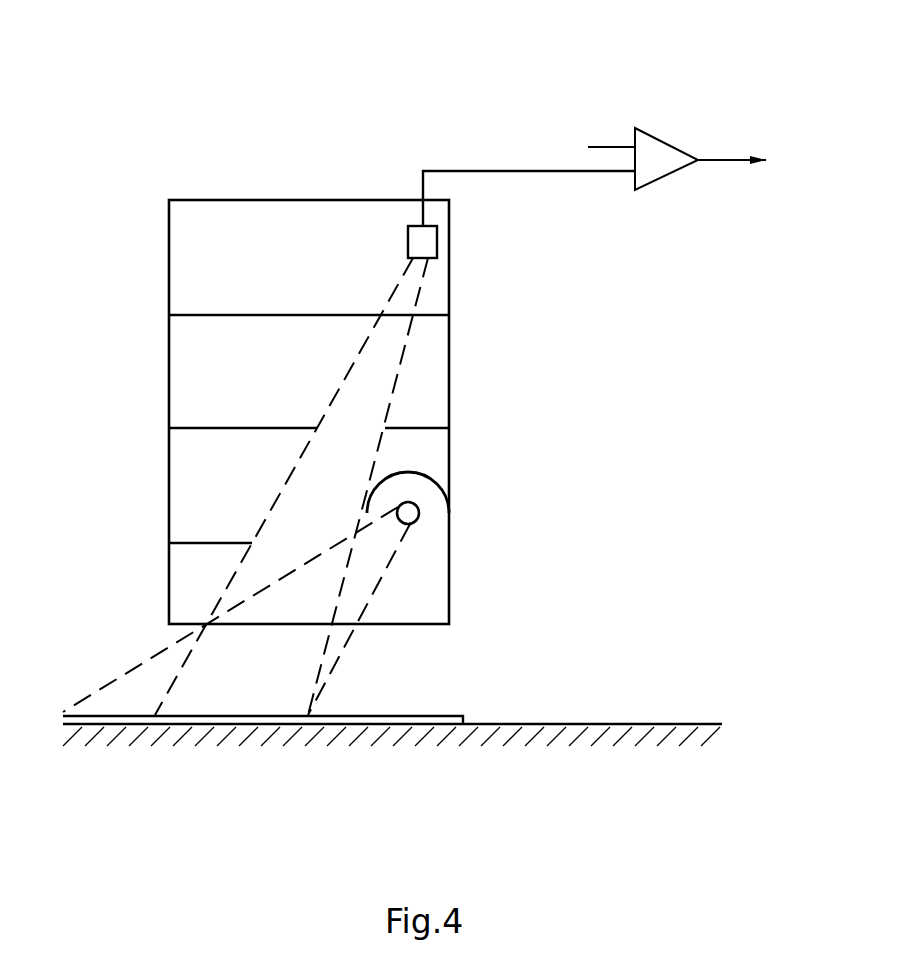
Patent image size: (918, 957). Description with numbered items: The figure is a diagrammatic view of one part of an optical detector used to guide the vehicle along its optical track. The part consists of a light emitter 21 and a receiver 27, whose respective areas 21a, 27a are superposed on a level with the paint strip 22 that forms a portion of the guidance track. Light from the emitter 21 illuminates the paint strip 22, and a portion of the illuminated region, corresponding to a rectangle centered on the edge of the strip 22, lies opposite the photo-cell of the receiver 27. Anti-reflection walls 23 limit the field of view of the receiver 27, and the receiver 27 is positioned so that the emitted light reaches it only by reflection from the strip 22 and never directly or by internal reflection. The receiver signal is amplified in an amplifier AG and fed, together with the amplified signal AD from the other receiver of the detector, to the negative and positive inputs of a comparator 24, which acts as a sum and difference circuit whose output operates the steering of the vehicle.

The light emitter 21 is at (412, 518).
The emitter area 21a is at (367, 580).
The paint strip 22 is at (398, 716).
The anti-reflection walls 23 is at (212, 541).
The comparator 24 is at (663, 160).
The receiver 27 is at (427, 248).
The receiver area 27a is at (317, 493).